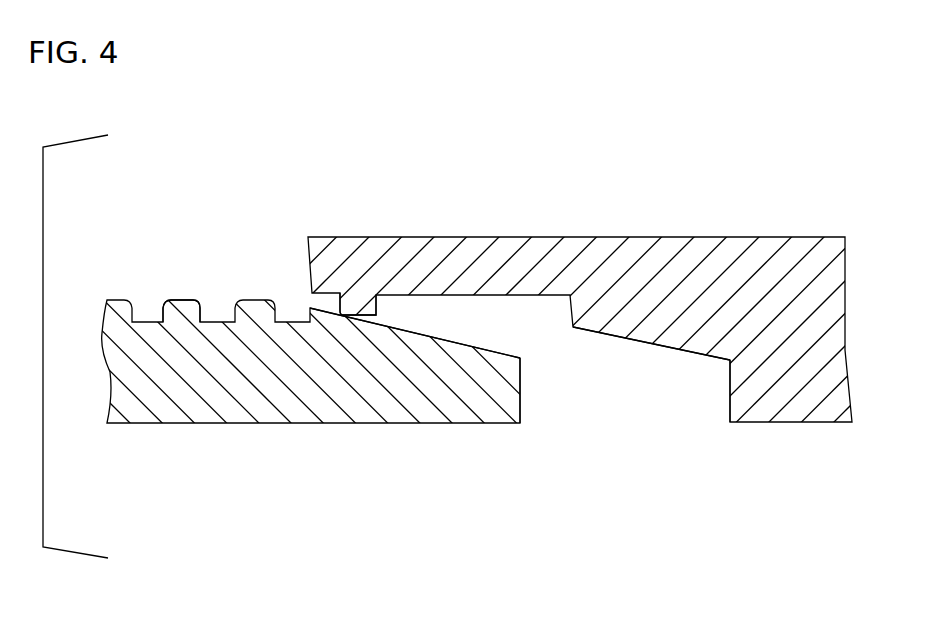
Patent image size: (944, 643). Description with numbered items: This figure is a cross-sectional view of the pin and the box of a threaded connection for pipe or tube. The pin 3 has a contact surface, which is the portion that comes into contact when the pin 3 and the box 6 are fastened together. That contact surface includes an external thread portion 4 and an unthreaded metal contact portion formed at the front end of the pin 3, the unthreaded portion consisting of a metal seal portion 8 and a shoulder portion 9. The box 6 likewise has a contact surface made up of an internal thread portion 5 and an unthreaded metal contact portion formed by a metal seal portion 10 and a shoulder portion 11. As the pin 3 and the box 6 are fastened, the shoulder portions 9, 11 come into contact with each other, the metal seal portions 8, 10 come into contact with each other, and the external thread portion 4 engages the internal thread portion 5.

The pin 3 is at (291, 441).
The thread portion (external thread) 4 is at (183, 300).
The thread portion (internal thread) 5 is at (338, 295).
The box 6 is at (688, 229).
The metal seal portion 8 is at (423, 341).
The shoulder portion 9 is at (520, 383).
The metal seal portion 10 is at (640, 347).
The shoulder portion 11 is at (730, 383).